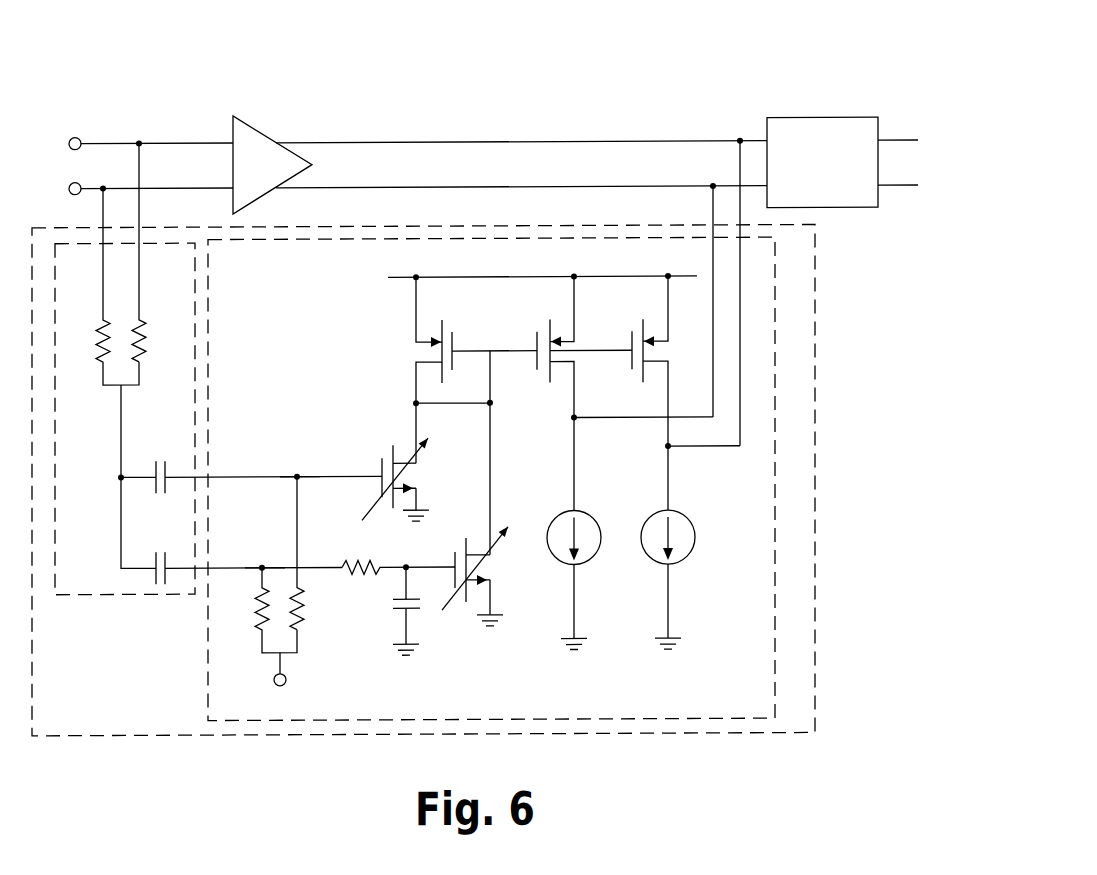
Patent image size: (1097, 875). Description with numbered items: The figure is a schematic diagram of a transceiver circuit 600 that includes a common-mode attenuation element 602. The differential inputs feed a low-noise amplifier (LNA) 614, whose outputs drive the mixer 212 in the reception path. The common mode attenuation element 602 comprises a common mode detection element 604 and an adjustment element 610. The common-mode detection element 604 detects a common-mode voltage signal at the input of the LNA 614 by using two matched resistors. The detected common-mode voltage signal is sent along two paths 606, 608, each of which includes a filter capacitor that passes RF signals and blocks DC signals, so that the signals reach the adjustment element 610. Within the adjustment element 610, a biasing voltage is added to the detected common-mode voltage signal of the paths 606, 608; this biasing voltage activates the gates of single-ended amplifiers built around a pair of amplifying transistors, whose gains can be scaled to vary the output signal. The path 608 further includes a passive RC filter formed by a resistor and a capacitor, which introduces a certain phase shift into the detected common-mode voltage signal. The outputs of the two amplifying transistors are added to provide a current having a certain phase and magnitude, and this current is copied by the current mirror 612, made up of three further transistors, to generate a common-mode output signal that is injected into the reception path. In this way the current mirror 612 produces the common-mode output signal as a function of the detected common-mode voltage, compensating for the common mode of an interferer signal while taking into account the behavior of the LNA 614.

The transceiver circuit 600 is at (103, 39).
The common mode attenuation element 602 is at (812, 276).
The common mode detection element 604 is at (118, 598).
The path 606 is at (221, 476).
The path 608 is at (224, 567).
The adjustment element 610 is at (210, 680).
The current mirror 612 is at (366, 312).
The low-noise amplifier (LNA) 614 is at (272, 134).
The mixer 212 is at (842, 162).